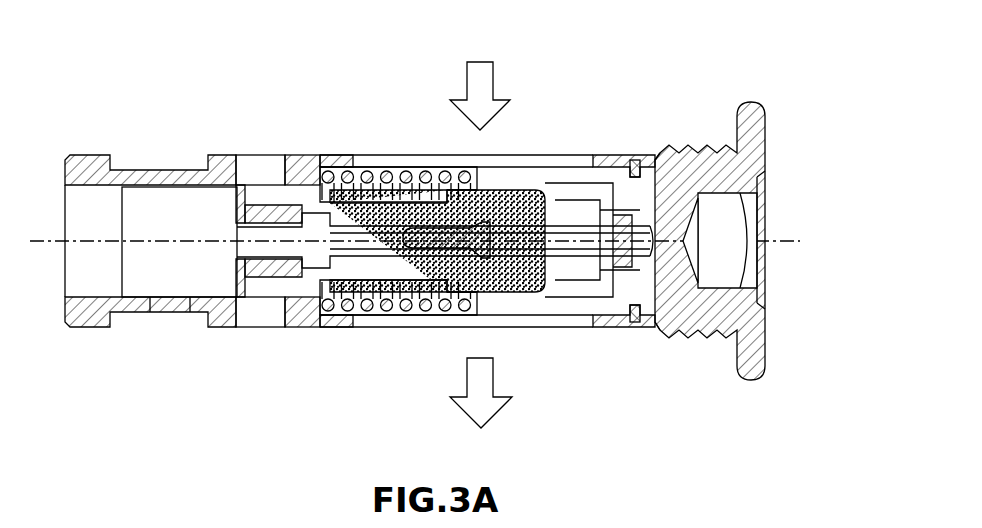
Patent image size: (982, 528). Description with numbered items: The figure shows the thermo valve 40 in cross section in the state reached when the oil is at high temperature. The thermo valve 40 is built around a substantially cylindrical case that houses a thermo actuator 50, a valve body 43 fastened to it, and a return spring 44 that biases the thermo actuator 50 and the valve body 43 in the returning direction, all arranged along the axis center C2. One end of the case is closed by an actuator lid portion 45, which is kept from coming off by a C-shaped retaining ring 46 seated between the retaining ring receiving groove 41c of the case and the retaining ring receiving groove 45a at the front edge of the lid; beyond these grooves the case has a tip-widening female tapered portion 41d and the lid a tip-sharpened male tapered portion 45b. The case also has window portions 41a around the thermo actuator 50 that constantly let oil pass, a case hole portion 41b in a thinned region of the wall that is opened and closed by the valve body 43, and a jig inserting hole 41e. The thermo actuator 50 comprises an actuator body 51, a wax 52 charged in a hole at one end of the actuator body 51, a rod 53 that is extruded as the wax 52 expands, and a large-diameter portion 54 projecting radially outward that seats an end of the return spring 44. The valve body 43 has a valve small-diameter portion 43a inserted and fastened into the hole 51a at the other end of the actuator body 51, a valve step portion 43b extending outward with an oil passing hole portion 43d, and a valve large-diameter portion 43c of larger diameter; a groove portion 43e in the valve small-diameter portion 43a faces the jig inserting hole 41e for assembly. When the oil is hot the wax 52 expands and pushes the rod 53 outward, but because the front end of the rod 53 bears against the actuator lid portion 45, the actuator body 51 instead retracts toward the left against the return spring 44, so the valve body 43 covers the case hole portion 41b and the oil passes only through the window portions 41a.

The thermo valve 40 is at (755, 70).
The window portions 41a is at (579, 168).
The case hole portion 41b is at (148, 308).
The retaining ring receiving groove 41c is at (650, 320).
The female tapered portion 41d is at (662, 165).
The jig inserting hole 41e is at (264, 168).
The valve body 43 is at (192, 247).
The valve small-diameter portion 43a is at (318, 178).
The valve step portion 43b is at (270, 300).
The valve large-diameter portion 43c is at (190, 308).
The oil passing hole portion 43d is at (236, 280).
The groove portion 43e is at (252, 176).
The return spring 44 is at (415, 296).
The actuator lid portion 45 is at (712, 146).
The retaining ring receiving groove 45a is at (630, 302).
The male tapered portion 45b is at (612, 283).
The C-shaped retaining ring 46 is at (638, 162).
The thermo actuator 50 is at (512, 305).
The actuator body 51 is at (398, 246).
The hole 51a is at (336, 310).
The wax 52 is at (408, 176).
The rod 53 is at (510, 176).
The large-diameter portion 54 is at (476, 170).
The axis center C2 is at (789, 241).